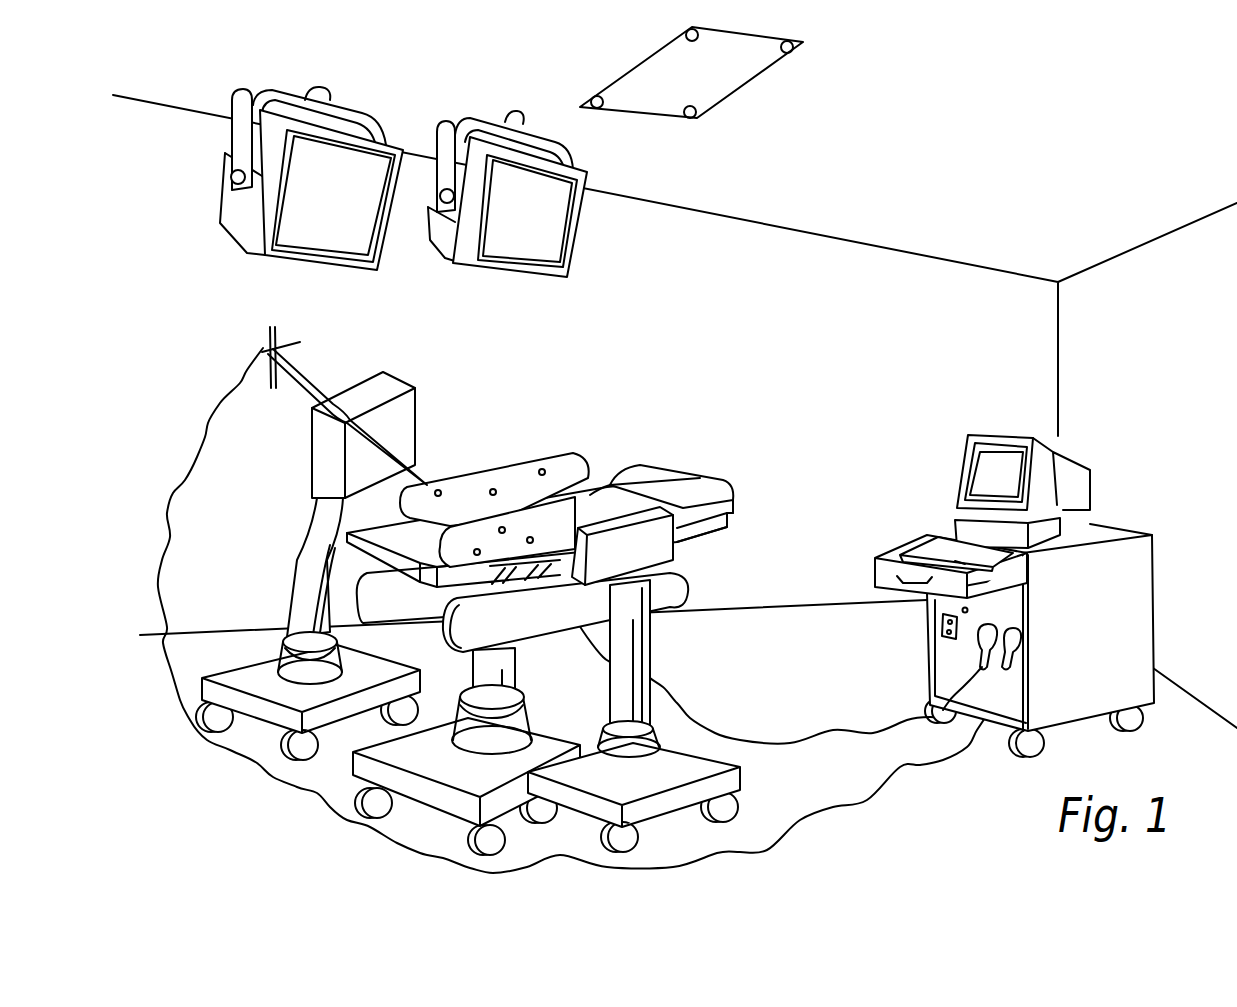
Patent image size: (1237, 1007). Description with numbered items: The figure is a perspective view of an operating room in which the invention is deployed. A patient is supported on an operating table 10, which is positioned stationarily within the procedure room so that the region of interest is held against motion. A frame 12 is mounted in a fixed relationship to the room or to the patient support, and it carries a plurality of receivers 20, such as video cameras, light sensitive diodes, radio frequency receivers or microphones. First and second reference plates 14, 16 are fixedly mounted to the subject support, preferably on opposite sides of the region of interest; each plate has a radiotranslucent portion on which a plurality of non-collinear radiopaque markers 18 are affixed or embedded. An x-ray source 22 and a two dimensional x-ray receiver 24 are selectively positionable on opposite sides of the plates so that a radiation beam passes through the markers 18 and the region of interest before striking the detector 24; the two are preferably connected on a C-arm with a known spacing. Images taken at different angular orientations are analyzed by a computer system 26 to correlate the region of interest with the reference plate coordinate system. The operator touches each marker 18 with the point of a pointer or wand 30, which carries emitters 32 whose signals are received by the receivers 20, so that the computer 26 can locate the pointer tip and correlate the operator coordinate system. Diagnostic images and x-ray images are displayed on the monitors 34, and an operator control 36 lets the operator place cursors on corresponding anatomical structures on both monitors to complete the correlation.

The operating table 10 is at (687, 473).
The frame 12 is at (753, 80).
The first reference plate 14 is at (700, 481).
The second reference plate 16 is at (600, 460).
The radiopaque markers 18 is at (477, 549).
The receivers 20 is at (695, 118).
The x-ray source 22 is at (675, 550).
The two dimensional x-ray receiver 24 is at (363, 380).
The computer system 26 is at (1103, 580).
The pointer or wand 30 is at (317, 378).
The emitters 32 is at (270, 330).
The monitors 34 is at (213, 225).
The operator control 36 is at (920, 555).